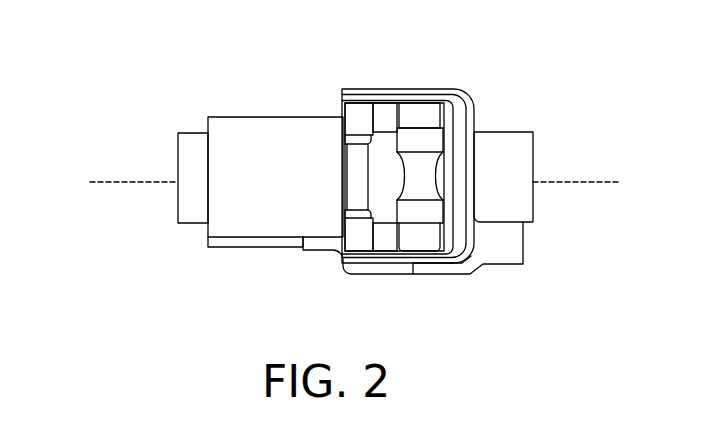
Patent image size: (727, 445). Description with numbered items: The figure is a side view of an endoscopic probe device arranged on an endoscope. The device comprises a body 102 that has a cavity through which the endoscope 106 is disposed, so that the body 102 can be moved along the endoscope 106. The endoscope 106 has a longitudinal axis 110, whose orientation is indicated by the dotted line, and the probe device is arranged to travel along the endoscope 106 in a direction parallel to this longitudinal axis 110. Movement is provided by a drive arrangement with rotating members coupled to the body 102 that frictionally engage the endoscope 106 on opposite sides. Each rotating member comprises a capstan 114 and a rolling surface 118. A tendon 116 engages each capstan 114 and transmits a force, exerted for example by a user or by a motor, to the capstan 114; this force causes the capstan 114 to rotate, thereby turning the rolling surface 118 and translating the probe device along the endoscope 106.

The body 102 is at (263, 216).
The endoscope 106 is at (509, 165).
The longitudinal axis 110 is at (335, 184).
The capstan 114 is at (413, 123).
The tendon 116 is at (524, 236).
The rolling surface 118 is at (420, 180).